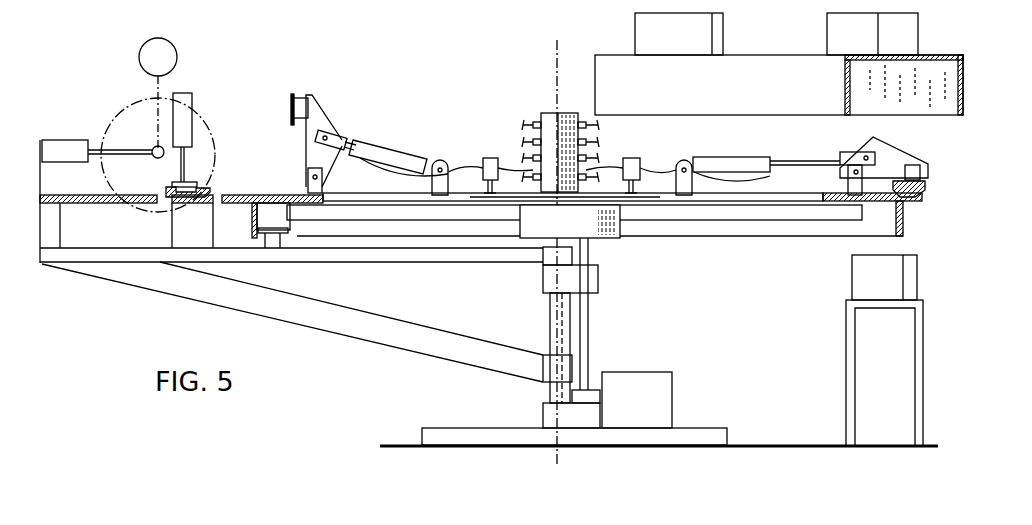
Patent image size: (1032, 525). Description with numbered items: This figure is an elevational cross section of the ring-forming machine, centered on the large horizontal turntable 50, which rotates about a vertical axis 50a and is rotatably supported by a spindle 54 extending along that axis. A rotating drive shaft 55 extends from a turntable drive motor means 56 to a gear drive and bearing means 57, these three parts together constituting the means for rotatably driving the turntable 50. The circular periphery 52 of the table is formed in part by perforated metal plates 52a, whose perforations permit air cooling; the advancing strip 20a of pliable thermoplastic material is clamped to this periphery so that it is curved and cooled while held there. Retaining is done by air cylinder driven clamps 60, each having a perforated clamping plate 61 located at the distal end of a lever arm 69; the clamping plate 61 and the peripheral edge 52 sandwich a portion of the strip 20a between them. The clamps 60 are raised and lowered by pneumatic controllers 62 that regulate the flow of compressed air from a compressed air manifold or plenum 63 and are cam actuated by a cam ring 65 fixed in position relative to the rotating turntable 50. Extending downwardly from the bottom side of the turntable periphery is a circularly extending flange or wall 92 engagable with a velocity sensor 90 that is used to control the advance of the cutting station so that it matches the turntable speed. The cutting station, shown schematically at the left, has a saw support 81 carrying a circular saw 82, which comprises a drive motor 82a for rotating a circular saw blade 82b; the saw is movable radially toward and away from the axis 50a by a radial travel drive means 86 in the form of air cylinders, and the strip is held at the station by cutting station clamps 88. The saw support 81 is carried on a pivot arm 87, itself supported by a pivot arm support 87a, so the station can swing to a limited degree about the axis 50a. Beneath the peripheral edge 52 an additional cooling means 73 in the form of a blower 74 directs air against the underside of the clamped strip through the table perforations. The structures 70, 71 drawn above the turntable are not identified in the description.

The strip of pliable thermoplastic material 20a is at (214, 184).
The turntable 50 is at (370, 190).
The vertical axis of rotation 50a is at (556, 50).
The circular periphery 52 is at (906, 210).
The perforated metal plates 52a is at (293, 195).
The spindle 54 is at (550, 320).
The rotating drive shaft 55 is at (590, 338).
The turntable drive motor means 56 is at (656, 388).
The gear drive and bearing means 57 is at (592, 240).
The air cylinder driven clamps 60 is at (425, 112).
The clamping plate 61 is at (293, 97).
The pneumatic controllers 62 is at (490, 156).
The compressed air manifold or plenum 63 is at (553, 112).
The cam ring 65 is at (618, 232).
The lever arm 69 is at (320, 125).
The tank 70 is at (803, 52).
The tank compartment 71 is at (683, 45).
The additional cooling means 73 is at (835, 333).
The blower 74 is at (852, 278).
The saw support 81 is at (86, 205).
The circular saw 82 is at (115, 84).
The drive motor 82a is at (178, 52).
The circular saw blade 82b is at (211, 136).
The radial travel drive means 86 is at (65, 131).
The pivot arm 87 is at (427, 258).
The pivot arm support 87a is at (274, 322).
The cutting station clamps 88 is at (192, 96).
The velocity sensor 90 is at (301, 243).
The circularly extending flange or wall 92 is at (250, 212).